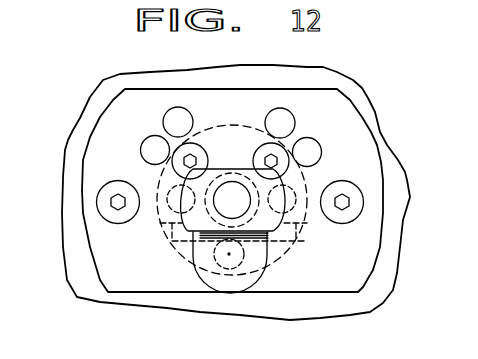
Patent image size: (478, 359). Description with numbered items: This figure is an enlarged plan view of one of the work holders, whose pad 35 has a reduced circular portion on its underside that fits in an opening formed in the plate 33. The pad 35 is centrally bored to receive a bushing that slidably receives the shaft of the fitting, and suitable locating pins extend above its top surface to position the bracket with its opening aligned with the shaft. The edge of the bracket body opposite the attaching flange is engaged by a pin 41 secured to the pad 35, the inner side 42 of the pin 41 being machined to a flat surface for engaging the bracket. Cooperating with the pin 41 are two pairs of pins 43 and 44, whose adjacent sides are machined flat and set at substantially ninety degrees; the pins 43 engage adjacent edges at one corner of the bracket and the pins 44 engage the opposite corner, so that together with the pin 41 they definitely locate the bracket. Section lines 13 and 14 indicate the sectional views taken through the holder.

The section line 13-13 / central bore 13 is at (197, 132).
The section line 14- 14 is at (97, 202).
The plate 33 is at (348, 305).
The pad 35 is at (347, 273).
The pin 41 is at (213, 286).
The inner side 42 is at (200, 232).
The pair of pins 43 is at (168, 118).
The pair of pins 44 is at (309, 145).